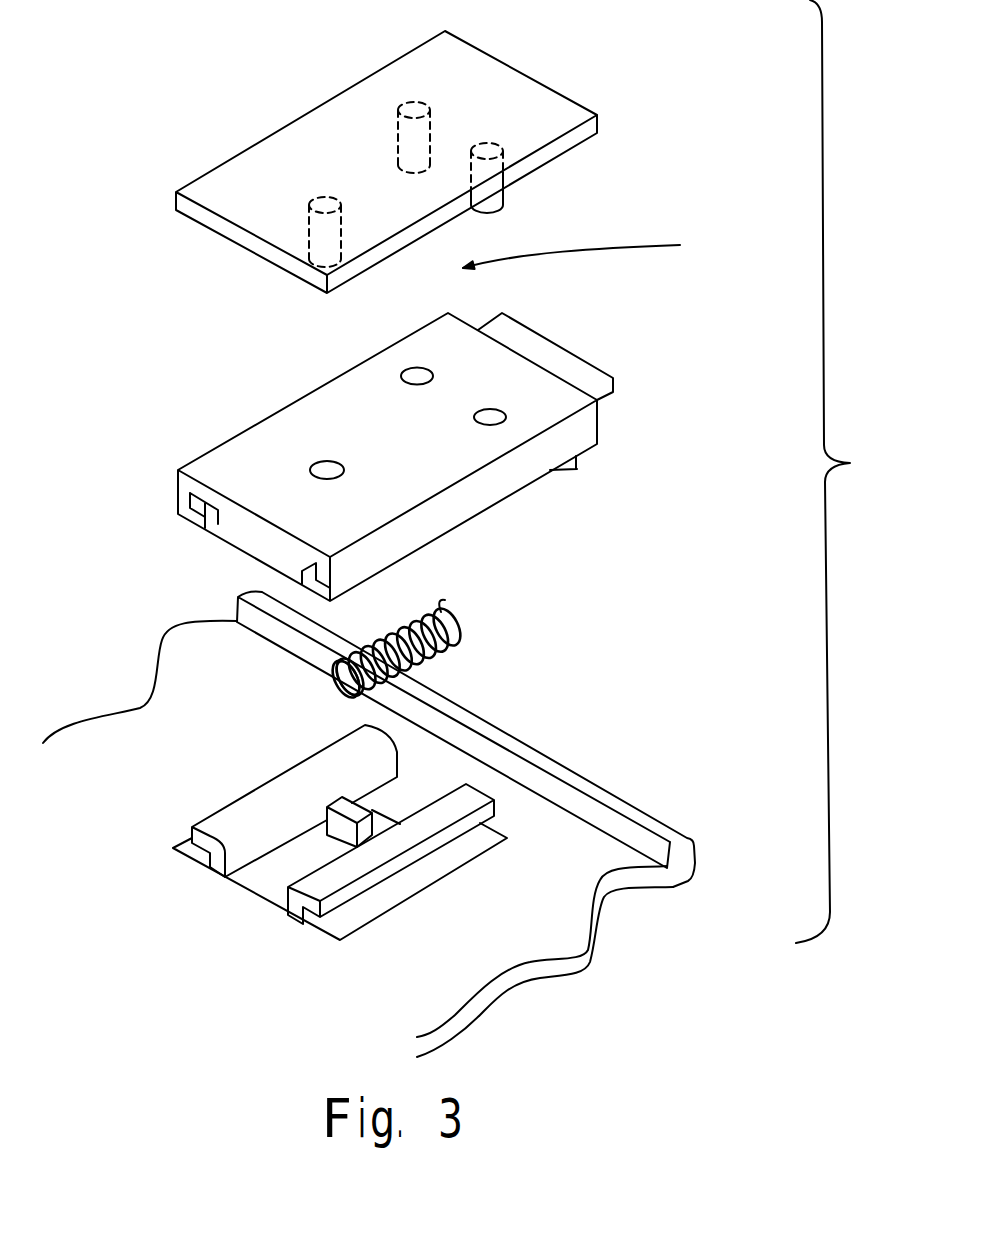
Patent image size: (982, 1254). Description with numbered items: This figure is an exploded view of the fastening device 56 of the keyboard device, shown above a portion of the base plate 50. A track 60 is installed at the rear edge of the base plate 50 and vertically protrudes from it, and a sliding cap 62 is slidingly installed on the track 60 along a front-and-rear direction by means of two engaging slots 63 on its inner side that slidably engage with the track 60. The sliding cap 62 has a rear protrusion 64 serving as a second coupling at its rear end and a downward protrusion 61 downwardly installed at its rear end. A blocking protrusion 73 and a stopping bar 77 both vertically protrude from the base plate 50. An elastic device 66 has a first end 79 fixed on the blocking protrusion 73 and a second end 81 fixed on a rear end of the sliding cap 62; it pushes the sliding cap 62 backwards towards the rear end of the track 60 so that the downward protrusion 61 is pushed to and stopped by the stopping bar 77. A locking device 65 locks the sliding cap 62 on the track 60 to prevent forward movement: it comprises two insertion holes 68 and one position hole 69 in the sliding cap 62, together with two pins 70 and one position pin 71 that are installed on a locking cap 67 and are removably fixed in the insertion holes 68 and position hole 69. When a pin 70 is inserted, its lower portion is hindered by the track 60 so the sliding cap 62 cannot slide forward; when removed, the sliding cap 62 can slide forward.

The base plate 50 is at (558, 880).
The fastening device 56 is at (847, 471).
The track 60 is at (462, 803).
The downward protrusion 61 is at (577, 469).
The sliding cap 62 is at (460, 487).
The engaging slots 63 is at (203, 510).
The rear protrusion 64 is at (548, 355).
The locking device 65 is at (588, 244).
The elastic device 66 is at (451, 632).
The locking cap 67 is at (512, 82).
The insertion holes 68 is at (413, 380).
The position hole 69 is at (323, 468).
The pins 70 is at (410, 142).
The position pin 71 is at (323, 235).
The blocking protrusion 73 is at (338, 823).
The stopping bar 77 is at (637, 815).
The first end 79 is at (340, 685).
The second end 81 is at (437, 602).